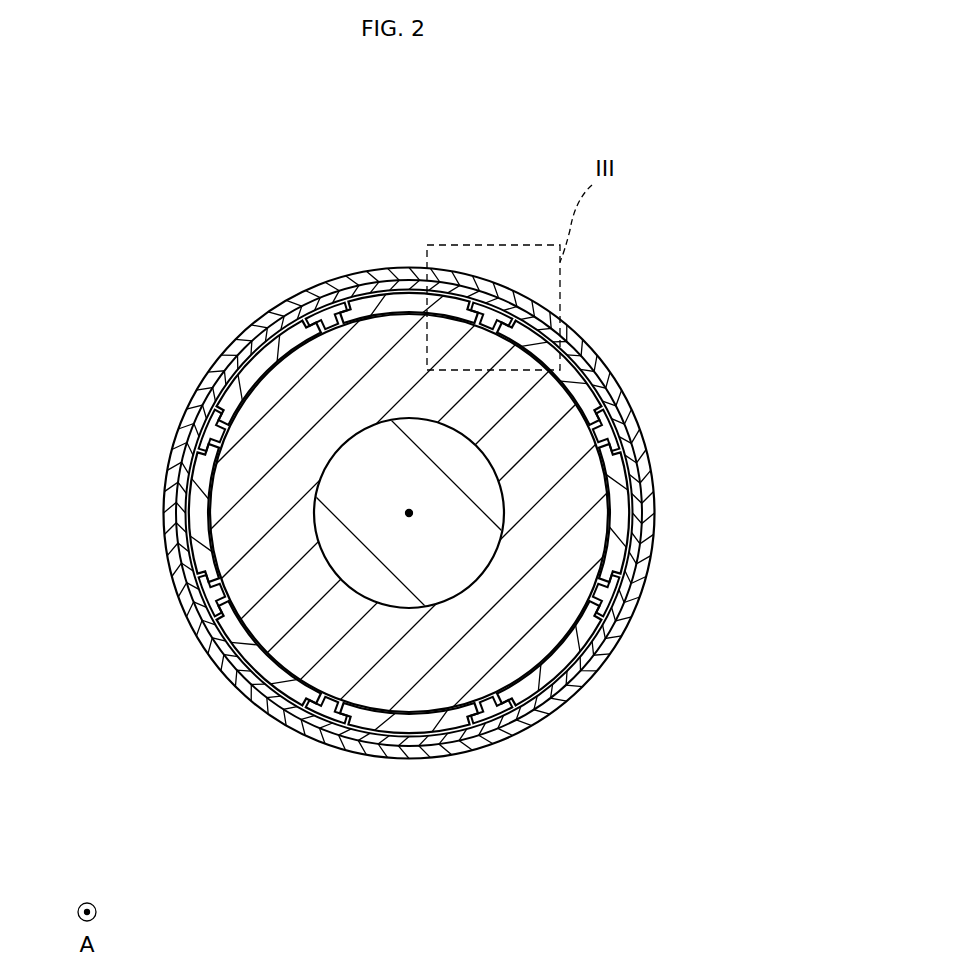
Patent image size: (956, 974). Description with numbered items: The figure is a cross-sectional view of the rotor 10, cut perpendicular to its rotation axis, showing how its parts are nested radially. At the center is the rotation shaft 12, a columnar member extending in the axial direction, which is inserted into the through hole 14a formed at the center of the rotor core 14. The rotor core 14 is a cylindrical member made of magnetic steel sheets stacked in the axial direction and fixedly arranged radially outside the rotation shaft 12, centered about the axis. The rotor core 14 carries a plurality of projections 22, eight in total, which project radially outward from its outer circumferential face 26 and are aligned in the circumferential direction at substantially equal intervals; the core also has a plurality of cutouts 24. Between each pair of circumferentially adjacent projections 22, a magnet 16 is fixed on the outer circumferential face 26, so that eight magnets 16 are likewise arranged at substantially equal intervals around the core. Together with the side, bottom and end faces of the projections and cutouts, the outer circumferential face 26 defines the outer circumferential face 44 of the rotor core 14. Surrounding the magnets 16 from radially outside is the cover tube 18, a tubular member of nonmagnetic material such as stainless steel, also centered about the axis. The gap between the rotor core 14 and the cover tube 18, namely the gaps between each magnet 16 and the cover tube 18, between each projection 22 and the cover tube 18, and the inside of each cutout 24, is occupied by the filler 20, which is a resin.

The rotor 10 is at (703, 168).
The rotation shaft 12 is at (379, 487).
The rotor core 14 is at (524, 602).
The through hole 14a is at (492, 474).
The magnet 16 is at (373, 304).
The cover tube 18 is at (283, 298).
The filler 20 is at (462, 280).
The projection 22 is at (321, 298).
The cutout 24 is at (486, 322).
The outer circumferential face 26 is at (410, 278).
The outer circumferential face of the rotor core 44 is at (613, 535).